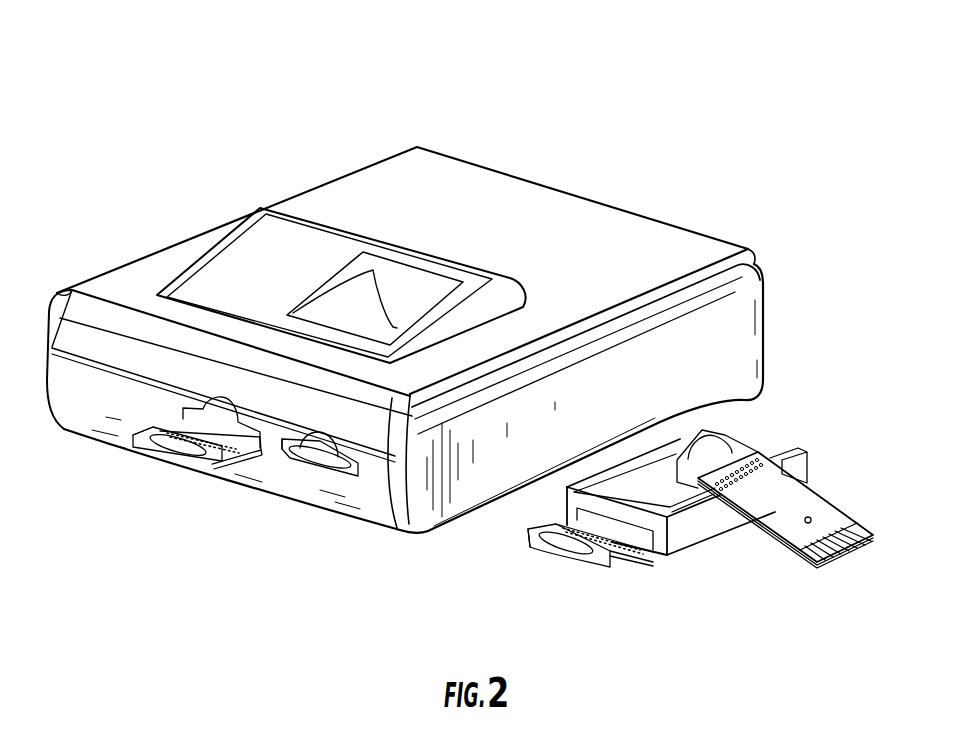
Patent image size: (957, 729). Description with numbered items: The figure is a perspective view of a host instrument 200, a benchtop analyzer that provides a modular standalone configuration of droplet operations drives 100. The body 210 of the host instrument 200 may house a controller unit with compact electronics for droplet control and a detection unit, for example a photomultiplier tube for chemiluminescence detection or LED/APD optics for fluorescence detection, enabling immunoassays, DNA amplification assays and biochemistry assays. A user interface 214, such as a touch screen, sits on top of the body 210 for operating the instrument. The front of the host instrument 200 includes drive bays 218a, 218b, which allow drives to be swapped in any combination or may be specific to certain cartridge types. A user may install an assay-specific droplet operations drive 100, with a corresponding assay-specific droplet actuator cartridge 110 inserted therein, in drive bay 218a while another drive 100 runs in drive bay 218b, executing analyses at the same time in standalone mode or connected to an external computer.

The host instrument 200 is at (315, 70).
The body 210 is at (528, 180).
The user interface 214 is at (237, 261).
The drive bay 218a is at (216, 518).
The drive bay 218b is at (318, 518).
The droplet actuator cartridge 110 is at (773, 552).
The droplet operations drive 100 is at (772, 438).